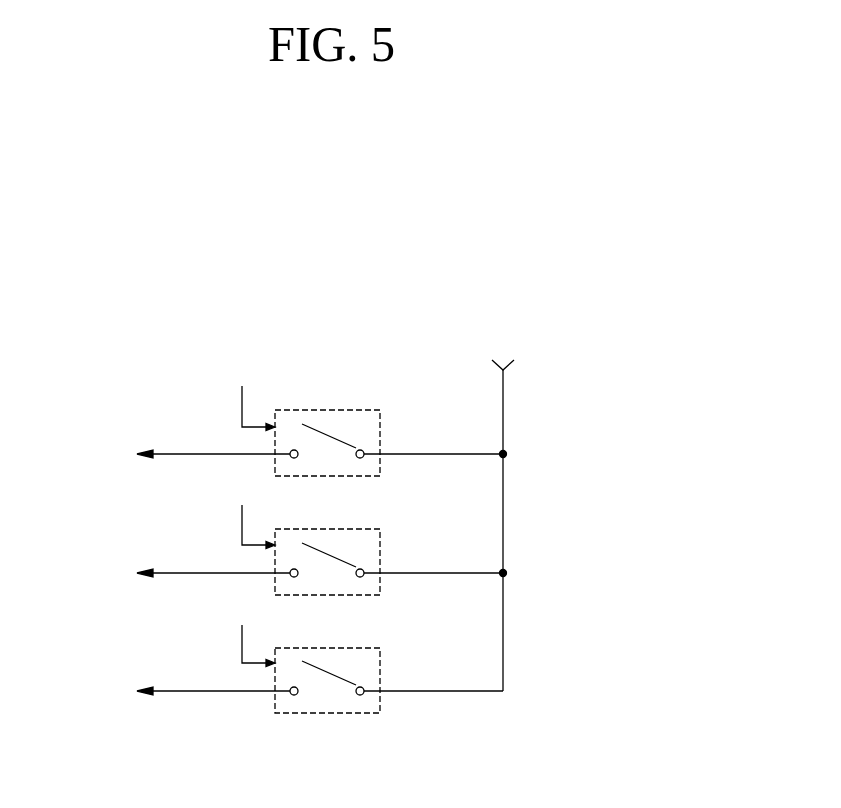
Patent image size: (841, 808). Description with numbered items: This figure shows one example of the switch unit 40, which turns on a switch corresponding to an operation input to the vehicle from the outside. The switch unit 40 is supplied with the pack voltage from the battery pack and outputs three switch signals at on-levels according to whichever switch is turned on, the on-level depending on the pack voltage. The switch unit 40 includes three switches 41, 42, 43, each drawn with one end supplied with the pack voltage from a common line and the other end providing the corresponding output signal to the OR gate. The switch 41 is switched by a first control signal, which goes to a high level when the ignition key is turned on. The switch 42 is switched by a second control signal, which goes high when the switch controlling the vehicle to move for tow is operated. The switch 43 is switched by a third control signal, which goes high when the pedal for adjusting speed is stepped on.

The switch unit 40 is at (370, 520).
The switch 41 is at (353, 410).
The switch 42 is at (353, 529).
The switch 43 is at (353, 648).